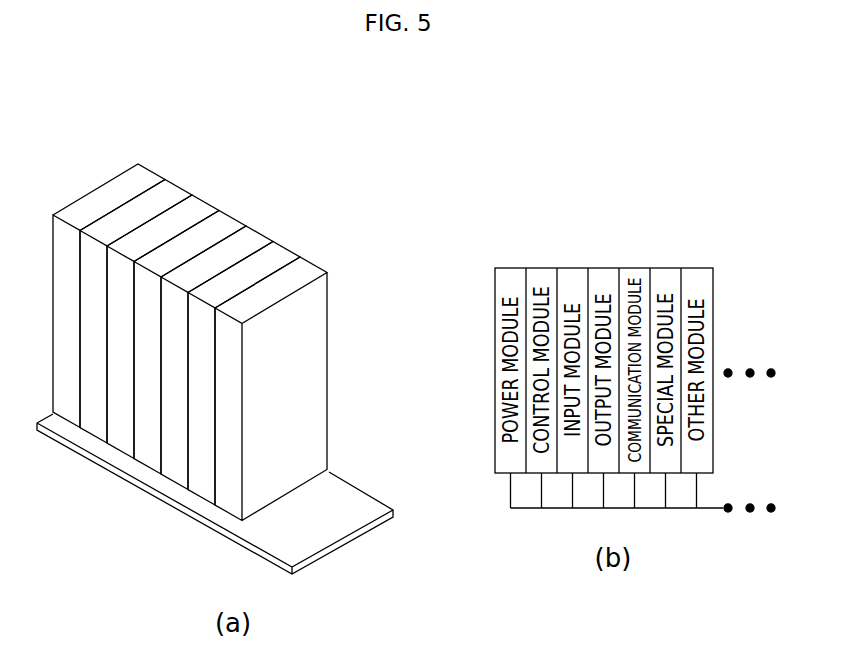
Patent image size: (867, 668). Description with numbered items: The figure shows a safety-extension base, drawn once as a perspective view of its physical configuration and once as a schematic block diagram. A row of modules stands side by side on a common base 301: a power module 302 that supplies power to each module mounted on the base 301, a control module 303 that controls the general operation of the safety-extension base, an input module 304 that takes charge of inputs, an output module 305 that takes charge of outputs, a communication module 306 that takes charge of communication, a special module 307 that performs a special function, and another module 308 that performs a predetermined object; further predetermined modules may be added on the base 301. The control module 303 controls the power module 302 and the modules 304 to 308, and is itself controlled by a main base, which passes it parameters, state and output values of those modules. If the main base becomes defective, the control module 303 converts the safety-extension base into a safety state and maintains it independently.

The base 301 is at (341, 497).
The power module 302 is at (148, 172).
The control module 303 is at (175, 192).
The input module 304 is at (201, 211).
The output module 305 is at (230, 222).
The communication module 306 is at (258, 238).
The special module 307 is at (283, 253).
The another module 308 is at (310, 268).